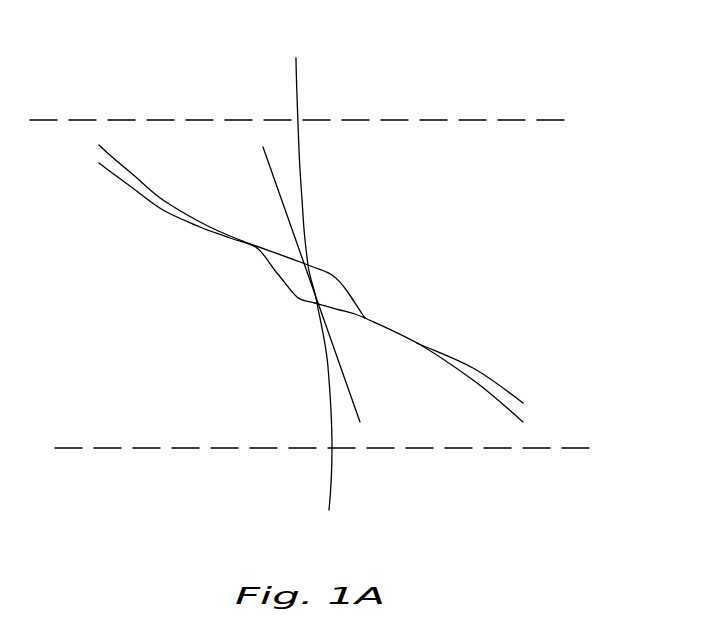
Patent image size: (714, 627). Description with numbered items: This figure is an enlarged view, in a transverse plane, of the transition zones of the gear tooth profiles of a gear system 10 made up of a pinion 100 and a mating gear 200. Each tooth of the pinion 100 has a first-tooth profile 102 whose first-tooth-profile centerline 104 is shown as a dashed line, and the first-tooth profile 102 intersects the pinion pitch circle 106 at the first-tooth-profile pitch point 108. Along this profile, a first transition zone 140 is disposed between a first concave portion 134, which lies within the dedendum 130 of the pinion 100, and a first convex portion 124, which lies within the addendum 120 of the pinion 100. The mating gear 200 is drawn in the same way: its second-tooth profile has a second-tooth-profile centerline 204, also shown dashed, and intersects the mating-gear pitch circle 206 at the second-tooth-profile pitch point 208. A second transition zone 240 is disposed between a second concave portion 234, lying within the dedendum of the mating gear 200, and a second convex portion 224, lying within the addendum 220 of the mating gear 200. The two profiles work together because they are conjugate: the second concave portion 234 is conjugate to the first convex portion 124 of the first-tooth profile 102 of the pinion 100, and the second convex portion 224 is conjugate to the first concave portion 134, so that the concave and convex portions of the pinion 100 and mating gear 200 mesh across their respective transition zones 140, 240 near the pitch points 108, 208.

The gear system 10 is at (124, 80).
The pinion 100 is at (114, 358).
The first-tooth profile 102 is at (485, 418).
The first-tooth-profile centerline 104 is at (175, 448).
The pinion pitch circle 106 is at (330, 484).
The first-tooth-profile pitch point 108 is at (314, 309).
The addendum of the pinion 120 is at (445, 383).
The first convex portion 124 is at (418, 343).
The dedendum of the pinion 130 is at (172, 239).
The first concave portion 134 is at (129, 184).
The first transition zone 140 is at (288, 309).
The mating gear 200 is at (455, 206).
The second-tooth-profile centerline 204 is at (450, 120).
The mating-gear pitch circle 206 is at (296, 185).
The second-tooth-profile pitch point 208 is at (311, 262).
The addendum of the mating gear 220 is at (179, 186).
The second convex portion 224 is at (140, 162).
The second concave portion 234 is at (466, 338).
The second transition zone 240 is at (342, 265).